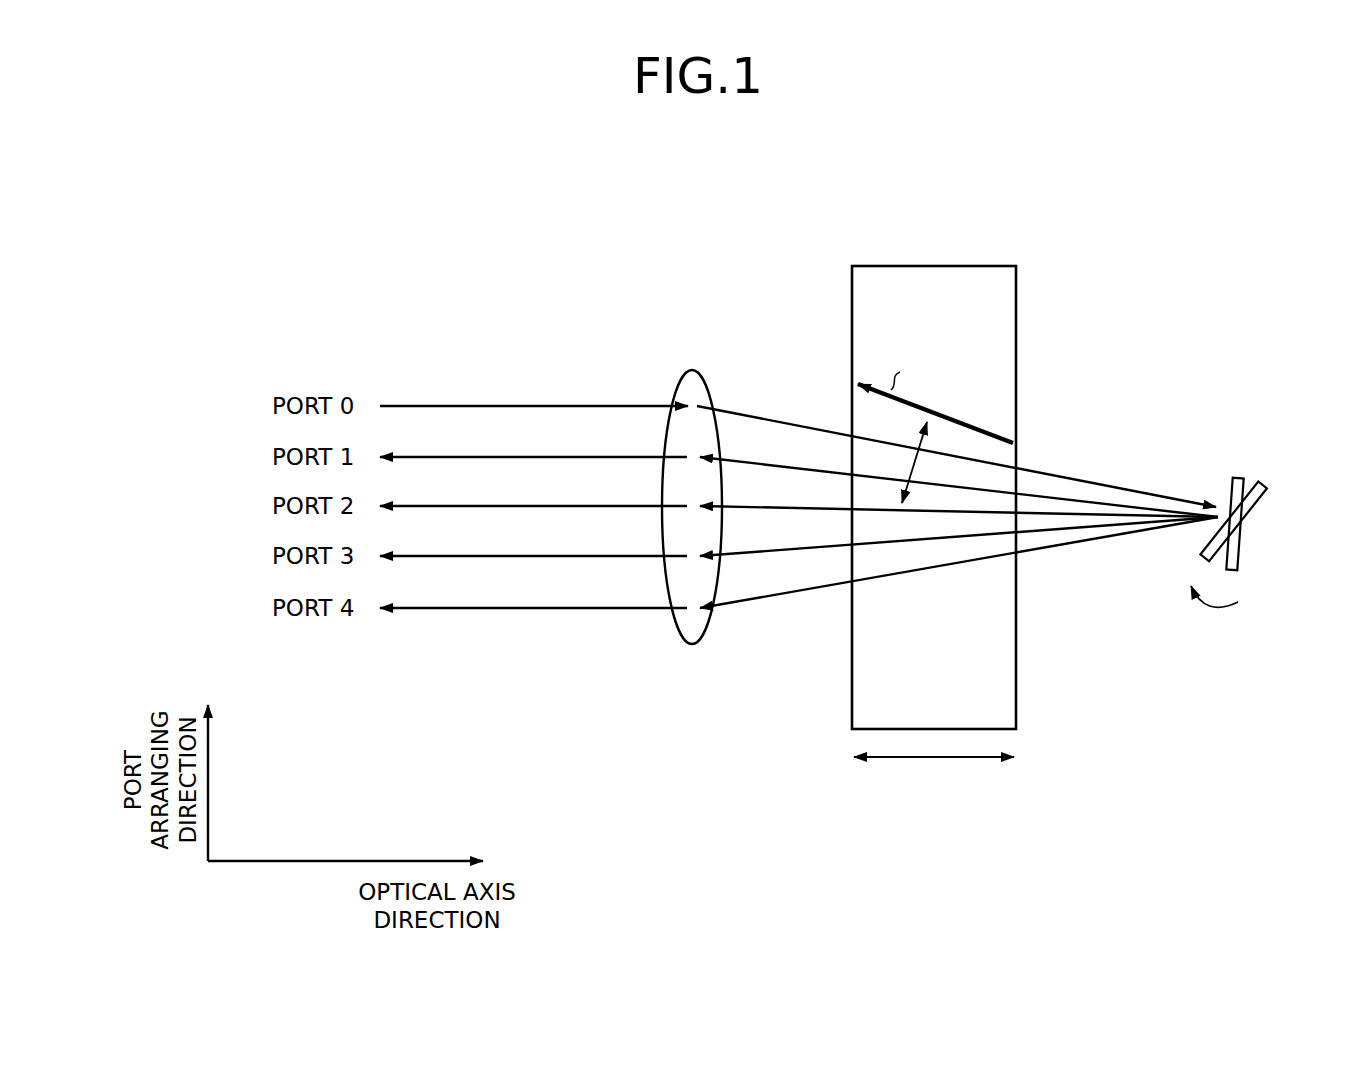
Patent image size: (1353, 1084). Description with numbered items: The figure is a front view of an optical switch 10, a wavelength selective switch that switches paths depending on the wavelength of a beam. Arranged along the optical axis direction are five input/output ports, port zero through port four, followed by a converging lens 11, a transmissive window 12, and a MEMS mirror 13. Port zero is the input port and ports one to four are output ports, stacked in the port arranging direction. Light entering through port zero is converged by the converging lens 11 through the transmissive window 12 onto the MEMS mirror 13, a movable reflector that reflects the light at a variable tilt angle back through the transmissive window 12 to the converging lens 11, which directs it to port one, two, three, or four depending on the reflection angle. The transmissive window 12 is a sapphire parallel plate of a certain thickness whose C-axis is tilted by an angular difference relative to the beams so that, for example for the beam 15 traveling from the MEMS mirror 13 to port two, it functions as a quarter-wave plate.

The optical switch 10 is at (802, 245).
The converging lens 11 is at (693, 371).
The transmissive window 12 is at (980, 266).
The MEMS mirror 13 is at (1242, 475).
The beam 15 is at (1063, 513).